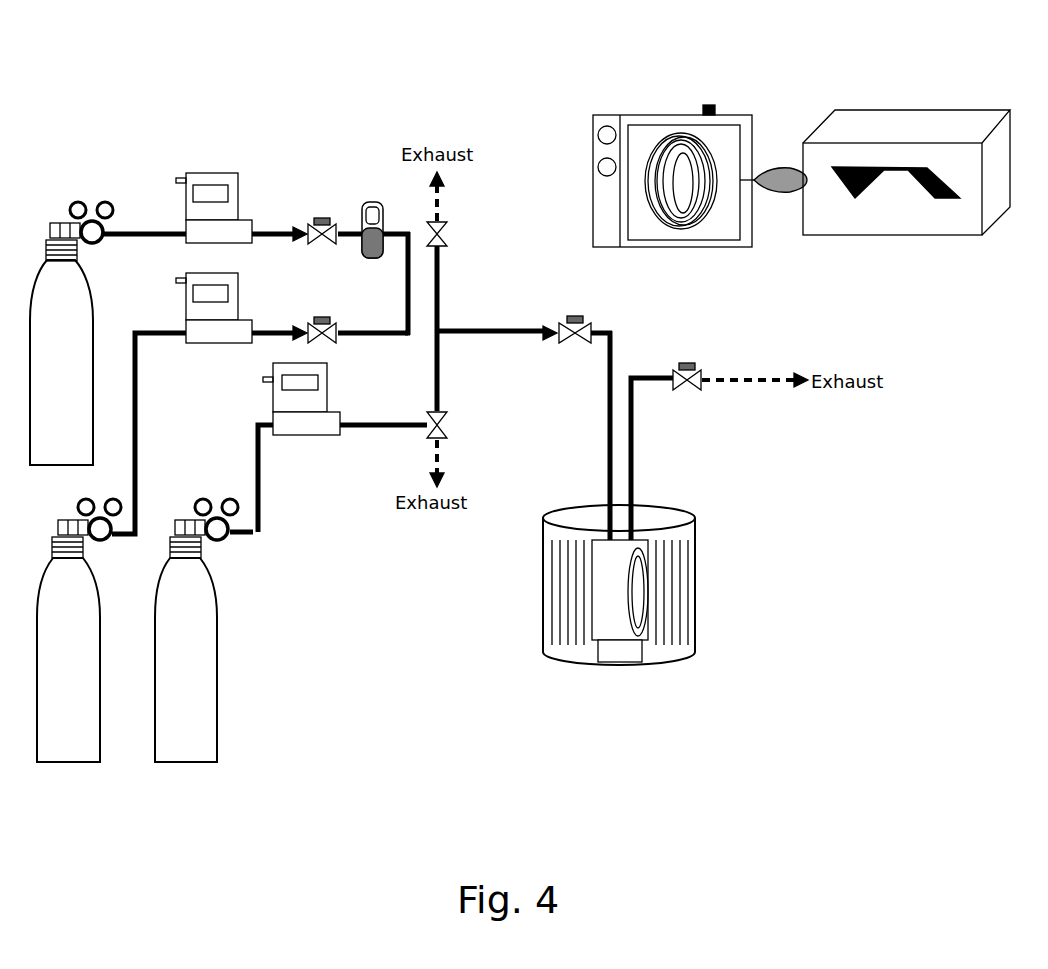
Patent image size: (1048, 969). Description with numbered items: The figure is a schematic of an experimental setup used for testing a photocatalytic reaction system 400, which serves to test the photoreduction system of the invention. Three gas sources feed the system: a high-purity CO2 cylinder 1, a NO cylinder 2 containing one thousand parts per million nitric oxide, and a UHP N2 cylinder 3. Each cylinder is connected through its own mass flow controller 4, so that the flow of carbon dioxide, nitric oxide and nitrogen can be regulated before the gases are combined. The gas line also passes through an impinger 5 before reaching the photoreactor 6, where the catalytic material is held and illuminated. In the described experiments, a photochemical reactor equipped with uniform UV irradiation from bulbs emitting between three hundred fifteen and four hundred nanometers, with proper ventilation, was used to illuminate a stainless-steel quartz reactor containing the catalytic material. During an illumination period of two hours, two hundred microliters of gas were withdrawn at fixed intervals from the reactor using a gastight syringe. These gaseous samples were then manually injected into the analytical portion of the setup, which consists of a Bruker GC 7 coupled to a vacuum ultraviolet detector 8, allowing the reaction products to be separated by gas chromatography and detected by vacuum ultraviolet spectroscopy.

The photocatalytic reaction system 400 is at (826, 60).
The 99.99% CO2 cylinder 1 is at (71, 351).
The 1000 ppm NO cylinder 2 is at (79, 649).
The UHP N2 cylinder 3 is at (196, 649).
The mass flow controller 4 is at (268, 304).
The impinger 5 is at (386, 219).
The photoreactor 6 is at (643, 585).
The Bruker GC 7 is at (700, 190).
The vacuum ultraviolet detector 8 is at (906, 193).